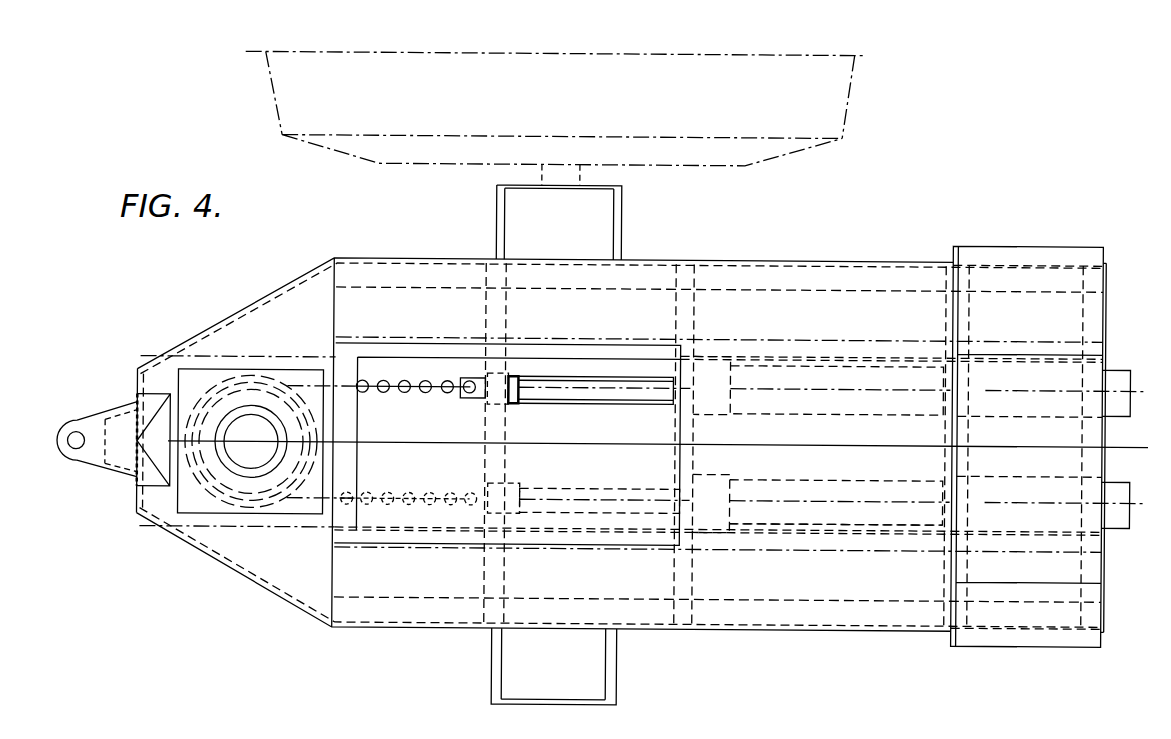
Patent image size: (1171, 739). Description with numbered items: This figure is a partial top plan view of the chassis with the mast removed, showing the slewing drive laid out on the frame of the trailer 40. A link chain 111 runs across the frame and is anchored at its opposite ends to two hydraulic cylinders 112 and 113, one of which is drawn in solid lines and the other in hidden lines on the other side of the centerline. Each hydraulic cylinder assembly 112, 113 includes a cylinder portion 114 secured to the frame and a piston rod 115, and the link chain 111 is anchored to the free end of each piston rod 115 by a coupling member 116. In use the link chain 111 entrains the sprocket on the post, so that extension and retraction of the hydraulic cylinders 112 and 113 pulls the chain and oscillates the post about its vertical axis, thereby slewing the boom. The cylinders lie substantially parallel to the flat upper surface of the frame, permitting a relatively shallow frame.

The trailer frame 40 is at (1170, 437).
The link chain 111 is at (453, 485).
The hydraulic cylinder 112 is at (881, 491).
The hydraulic cylinder 113 is at (839, 383).
The cylinder portion 114 is at (872, 518).
The piston rod 115 is at (645, 467).
The coupling member 116 is at (500, 490).